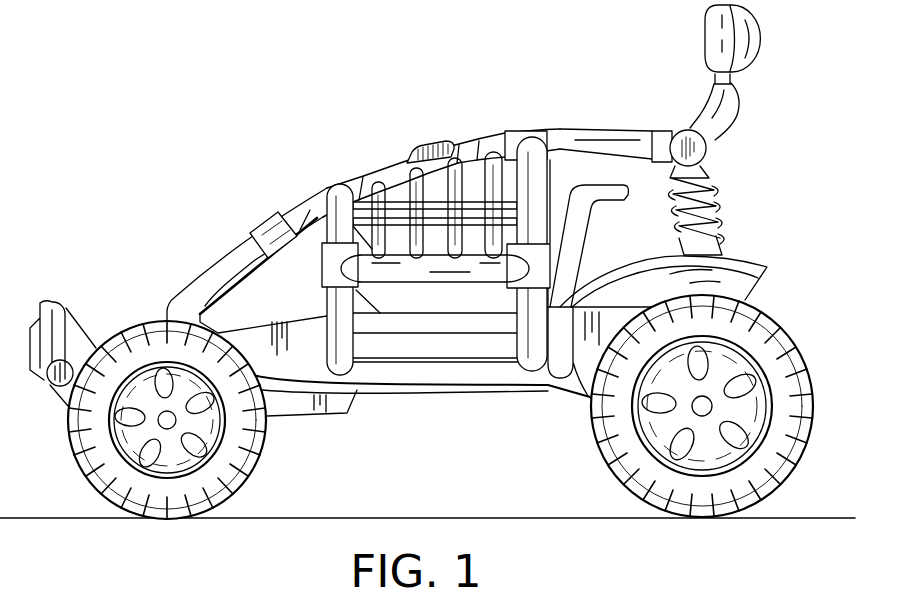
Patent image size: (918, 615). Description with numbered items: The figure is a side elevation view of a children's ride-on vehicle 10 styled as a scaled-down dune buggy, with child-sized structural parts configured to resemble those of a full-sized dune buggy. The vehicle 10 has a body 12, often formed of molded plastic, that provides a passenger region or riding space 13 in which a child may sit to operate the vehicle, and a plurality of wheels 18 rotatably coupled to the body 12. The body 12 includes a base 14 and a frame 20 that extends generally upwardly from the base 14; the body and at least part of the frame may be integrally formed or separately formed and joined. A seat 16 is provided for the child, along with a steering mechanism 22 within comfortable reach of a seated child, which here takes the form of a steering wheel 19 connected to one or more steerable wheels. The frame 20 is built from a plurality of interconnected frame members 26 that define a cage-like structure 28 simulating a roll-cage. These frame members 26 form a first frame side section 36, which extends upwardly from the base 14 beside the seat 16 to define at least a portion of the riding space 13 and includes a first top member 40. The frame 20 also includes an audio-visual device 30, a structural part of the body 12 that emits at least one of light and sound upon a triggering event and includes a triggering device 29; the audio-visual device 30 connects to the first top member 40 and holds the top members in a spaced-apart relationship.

The ride-on vehicle 10 is at (428, 262).
The body 12 is at (398, 334).
The riding space 13 is at (575, 170).
The base 14 is at (430, 378).
The seat 16 is at (608, 196).
The wheels 18 is at (77, 462).
The steering wheel 19 is at (362, 205).
The frame 20 is at (586, 125).
The steering mechanism 22 is at (362, 182).
The frame members 26 is at (195, 290).
The cage-like structure 28 is at (527, 124).
The triggering device 29 is at (637, 133).
The audio-visual device 30 is at (258, 212).
The first frame side section 36 is at (443, 287).
The first top member 40 is at (222, 273).